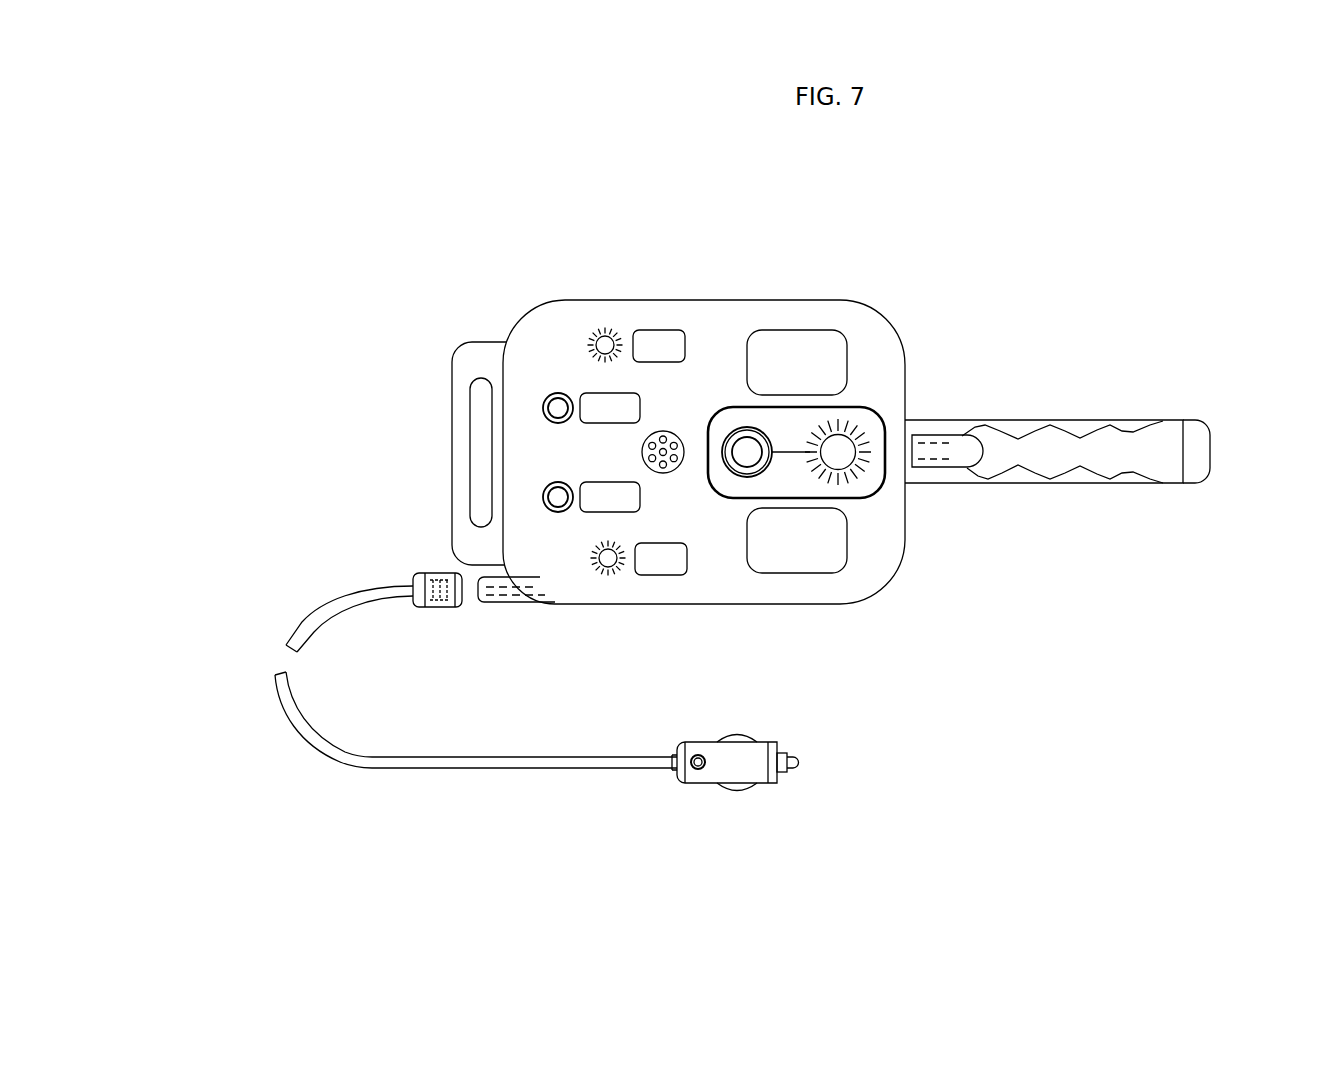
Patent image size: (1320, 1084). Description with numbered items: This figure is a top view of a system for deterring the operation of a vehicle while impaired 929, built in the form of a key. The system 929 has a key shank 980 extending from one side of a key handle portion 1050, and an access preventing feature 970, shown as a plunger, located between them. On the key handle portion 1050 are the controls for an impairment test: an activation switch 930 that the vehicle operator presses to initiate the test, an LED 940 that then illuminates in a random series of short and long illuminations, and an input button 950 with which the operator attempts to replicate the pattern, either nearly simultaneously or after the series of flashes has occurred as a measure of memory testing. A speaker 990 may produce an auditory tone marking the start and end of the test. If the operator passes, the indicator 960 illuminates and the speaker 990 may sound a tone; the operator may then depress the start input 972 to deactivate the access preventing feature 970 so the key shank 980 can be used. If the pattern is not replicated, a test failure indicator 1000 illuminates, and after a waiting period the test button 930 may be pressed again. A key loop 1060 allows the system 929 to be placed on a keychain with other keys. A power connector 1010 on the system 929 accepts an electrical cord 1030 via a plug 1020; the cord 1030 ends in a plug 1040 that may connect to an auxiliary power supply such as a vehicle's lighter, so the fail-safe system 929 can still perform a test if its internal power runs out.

The system for deterring the operation of a vehicle while impaired 929 is at (735, 418).
The activation switch 930 is at (542, 382).
The LED 940 is at (961, 392).
The input button 950 is at (812, 303).
The indicator 960 is at (582, 557).
The access preventing feature 970 is at (1090, 655).
The start input 972 is at (548, 468).
The key shank 980 is at (1178, 573).
The speaker 990 is at (850, 663).
The test failure indicator 1000 is at (582, 330).
The power connector 1010 is at (630, 695).
The plug 1020 is at (413, 718).
The electrical cord 1030 is at (268, 842).
The plug 1040 is at (880, 828).
The key handle portion 1050 is at (480, 193).
The key loop 1060 is at (487, 438).